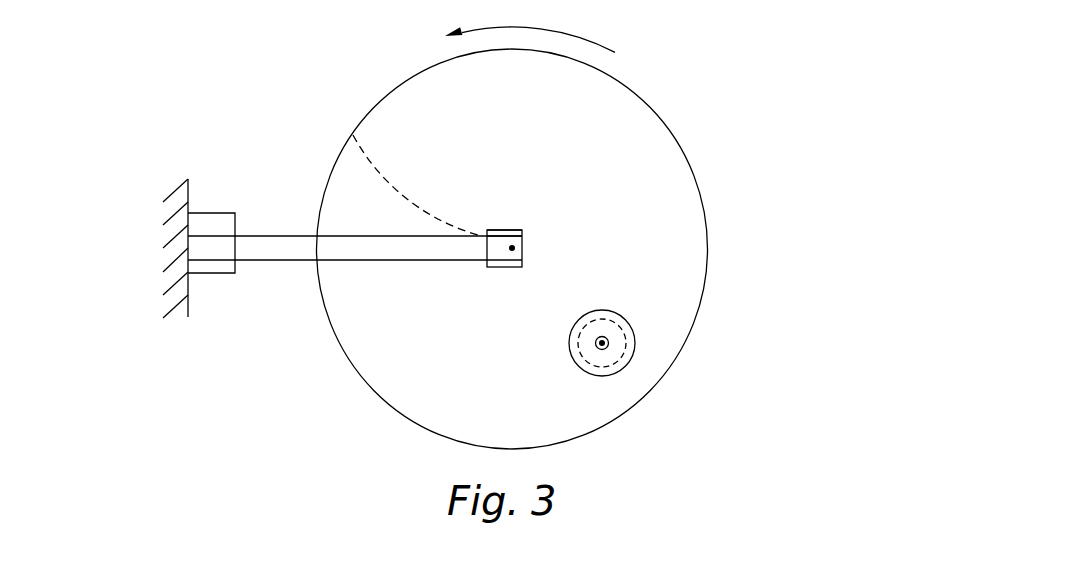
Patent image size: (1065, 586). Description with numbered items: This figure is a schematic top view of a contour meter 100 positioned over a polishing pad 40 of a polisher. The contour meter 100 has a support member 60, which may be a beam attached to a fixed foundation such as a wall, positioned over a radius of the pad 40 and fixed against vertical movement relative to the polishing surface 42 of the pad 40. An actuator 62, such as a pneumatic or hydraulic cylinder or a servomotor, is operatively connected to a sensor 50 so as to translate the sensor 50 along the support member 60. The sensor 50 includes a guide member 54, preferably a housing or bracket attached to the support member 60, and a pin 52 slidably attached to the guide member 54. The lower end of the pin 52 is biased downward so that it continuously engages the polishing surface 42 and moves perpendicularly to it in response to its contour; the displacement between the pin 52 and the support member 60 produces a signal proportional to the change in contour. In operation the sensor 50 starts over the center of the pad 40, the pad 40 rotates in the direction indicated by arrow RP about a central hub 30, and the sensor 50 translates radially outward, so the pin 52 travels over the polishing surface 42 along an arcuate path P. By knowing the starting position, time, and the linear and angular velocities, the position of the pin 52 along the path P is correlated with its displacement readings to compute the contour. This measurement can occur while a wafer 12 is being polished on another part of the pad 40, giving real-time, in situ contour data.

The wafer 12 is at (598, 368).
The hub / spindle 30 is at (633, 355).
The polishing pad 40 is at (707, 242).
The polishing surface 42 is at (662, 283).
The sensor 50 is at (553, 229).
The pin 52 is at (504, 251).
The guide member 54 is at (507, 230).
The support member 60 is at (453, 250).
The actuator 62 is at (215, 218).
The contour meter 100 is at (364, 304).
The path P is at (397, 190).
The direction of pad rotation RP is at (530, 31).